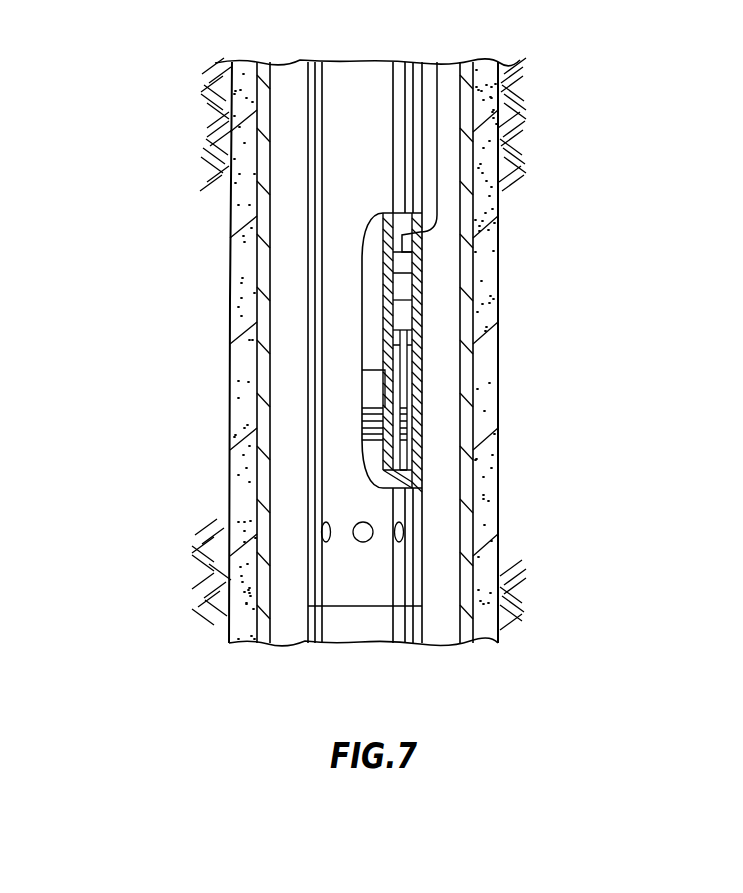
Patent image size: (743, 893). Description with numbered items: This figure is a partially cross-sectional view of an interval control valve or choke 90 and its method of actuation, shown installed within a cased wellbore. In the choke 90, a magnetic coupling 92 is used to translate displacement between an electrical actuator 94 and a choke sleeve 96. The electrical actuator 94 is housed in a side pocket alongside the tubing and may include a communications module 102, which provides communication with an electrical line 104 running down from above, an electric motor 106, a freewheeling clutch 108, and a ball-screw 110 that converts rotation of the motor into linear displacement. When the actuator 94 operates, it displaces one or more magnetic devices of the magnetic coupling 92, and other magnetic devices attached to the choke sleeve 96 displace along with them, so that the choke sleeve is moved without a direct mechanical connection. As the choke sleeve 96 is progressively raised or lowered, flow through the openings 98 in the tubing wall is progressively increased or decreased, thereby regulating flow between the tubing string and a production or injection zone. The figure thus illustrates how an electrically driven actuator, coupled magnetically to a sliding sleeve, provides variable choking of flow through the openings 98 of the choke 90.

The choke 90 is at (308, 192).
The magnetic coupling 92 is at (430, 422).
The electrical actuator 94 is at (308, 300).
The choke sleeve 96 is at (360, 470).
The openings 98 is at (395, 543).
The communications module 102 is at (410, 262).
The electrical line 104 is at (437, 117).
The electric motor 106 is at (413, 282).
The freewheeling clutch 108 is at (413, 312).
The ball-screw 110 is at (422, 345).